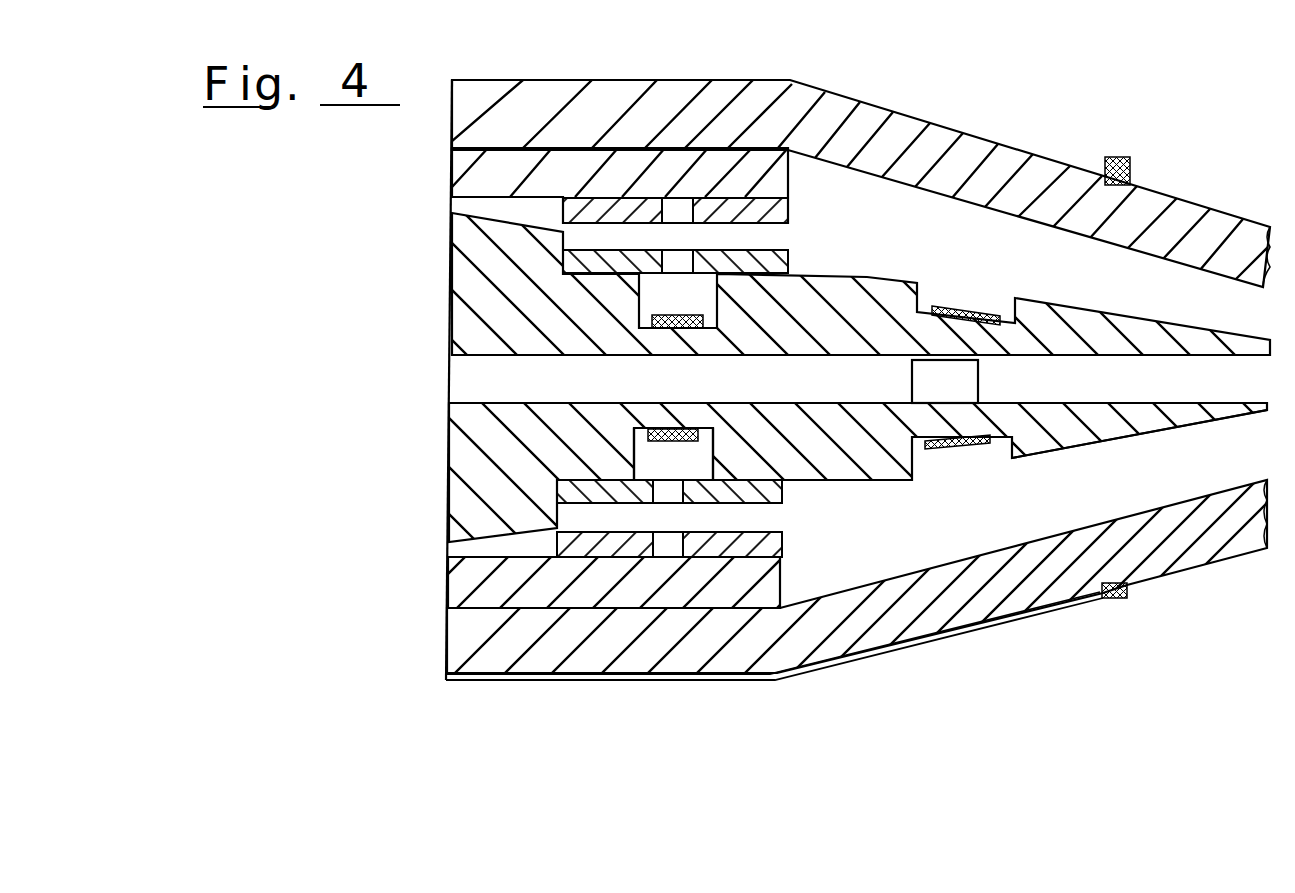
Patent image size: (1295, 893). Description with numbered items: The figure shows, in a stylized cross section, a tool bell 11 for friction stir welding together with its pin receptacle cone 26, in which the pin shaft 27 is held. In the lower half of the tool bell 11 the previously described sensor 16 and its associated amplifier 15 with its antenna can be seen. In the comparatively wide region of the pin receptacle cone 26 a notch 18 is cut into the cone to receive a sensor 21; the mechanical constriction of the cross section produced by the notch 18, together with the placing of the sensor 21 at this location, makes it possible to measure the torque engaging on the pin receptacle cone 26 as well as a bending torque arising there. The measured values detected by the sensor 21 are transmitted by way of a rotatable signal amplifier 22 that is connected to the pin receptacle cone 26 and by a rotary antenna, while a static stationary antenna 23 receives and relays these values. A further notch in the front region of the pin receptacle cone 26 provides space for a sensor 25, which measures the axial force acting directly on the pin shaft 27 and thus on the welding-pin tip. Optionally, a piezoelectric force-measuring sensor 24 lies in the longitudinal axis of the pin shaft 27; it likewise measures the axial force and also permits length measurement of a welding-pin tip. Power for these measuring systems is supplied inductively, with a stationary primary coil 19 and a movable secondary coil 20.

The tool bell 11 is at (935, 590).
The amplifier 15 is at (1117, 600).
The sensor 16 is at (832, 668).
The notch 18 is at (637, 445).
The stationary primary coil 19 is at (568, 558).
The movable secondary coil 20 is at (607, 490).
The sensor 21 is at (670, 438).
The rotatable signal amplifier 22 is at (707, 503).
The static stationary antenna 23 is at (742, 545).
The piezoelectric force-measuring sensor 24 is at (950, 388).
The sensor 25 is at (985, 322).
The pin receptacle cone 26 is at (1075, 427).
The pin shaft 27 is at (1213, 388).